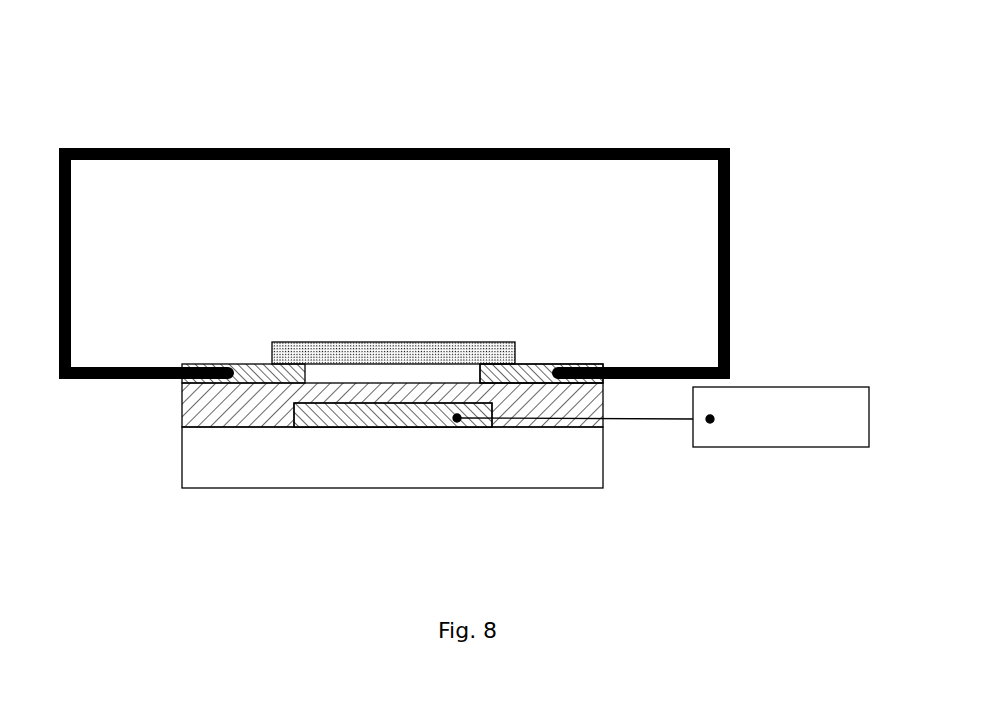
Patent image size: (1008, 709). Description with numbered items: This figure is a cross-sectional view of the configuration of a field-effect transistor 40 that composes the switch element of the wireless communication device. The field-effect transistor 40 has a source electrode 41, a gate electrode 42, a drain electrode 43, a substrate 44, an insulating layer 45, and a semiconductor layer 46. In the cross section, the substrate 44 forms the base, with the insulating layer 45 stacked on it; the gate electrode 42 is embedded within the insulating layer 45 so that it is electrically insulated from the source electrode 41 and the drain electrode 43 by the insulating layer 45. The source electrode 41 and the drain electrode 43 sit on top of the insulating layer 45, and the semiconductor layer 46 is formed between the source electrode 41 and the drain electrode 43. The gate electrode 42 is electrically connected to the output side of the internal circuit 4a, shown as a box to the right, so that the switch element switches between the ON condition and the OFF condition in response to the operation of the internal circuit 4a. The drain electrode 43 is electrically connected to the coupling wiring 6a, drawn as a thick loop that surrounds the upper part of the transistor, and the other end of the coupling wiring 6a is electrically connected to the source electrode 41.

The field-effect transistor 40 is at (414, 31).
The coupling wiring 6a is at (593, 148).
The source electrode 41 is at (257, 364).
The gate electrode 42 is at (372, 427).
The drain electrode 43 is at (535, 364).
The substrate 44 is at (196, 455).
The insulating layer 45 is at (182, 400).
The semiconductor layer 46 is at (404, 342).
The internal circuit 4a is at (828, 387).